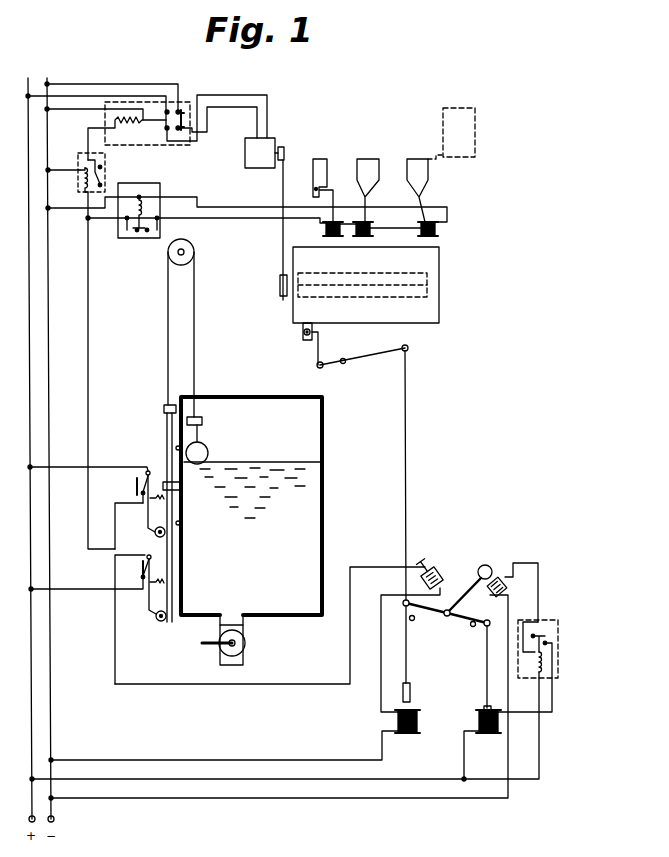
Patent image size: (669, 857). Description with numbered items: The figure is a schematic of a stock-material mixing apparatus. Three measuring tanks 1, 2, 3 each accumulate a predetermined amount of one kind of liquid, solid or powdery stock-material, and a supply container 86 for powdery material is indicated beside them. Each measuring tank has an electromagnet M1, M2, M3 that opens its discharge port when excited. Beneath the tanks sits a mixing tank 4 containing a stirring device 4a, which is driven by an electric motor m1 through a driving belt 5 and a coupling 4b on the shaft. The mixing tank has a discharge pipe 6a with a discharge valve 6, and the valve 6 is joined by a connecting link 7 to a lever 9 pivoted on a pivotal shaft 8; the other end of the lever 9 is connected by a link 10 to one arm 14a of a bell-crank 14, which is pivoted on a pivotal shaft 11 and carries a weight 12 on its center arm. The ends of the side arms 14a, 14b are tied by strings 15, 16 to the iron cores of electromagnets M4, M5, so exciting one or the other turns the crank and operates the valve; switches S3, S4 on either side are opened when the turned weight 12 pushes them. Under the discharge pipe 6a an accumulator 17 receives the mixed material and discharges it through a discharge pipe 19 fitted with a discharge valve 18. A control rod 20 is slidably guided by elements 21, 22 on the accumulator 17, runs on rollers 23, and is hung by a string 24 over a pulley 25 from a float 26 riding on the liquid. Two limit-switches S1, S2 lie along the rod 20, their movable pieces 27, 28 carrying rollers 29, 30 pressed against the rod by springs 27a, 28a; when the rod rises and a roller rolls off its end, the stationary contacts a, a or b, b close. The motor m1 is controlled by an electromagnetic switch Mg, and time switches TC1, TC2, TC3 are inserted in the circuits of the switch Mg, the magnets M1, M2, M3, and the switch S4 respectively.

The stock-material measuring tank 1 is at (322, 165).
The stock-material measuring tank 2 is at (367, 165).
The stock-material measuring tank 3 is at (416, 165).
The stock-material supply container 86 is at (462, 118).
The electromagnetic switch Mg is at (177, 116).
The electric motor m1 is at (278, 146).
The time switch TC1 is at (103, 172).
The time switch TC2 is at (158, 185).
The time switch TC3 is at (545, 618).
The electromagnet M1 is at (339, 237).
The electromagnet M2 is at (387, 237).
The electromagnet M3 is at (436, 237).
The electromagnet M4 is at (408, 733).
The electromagnet M5 is at (488, 733).
The mixing tank 4 is at (439, 312).
The stirring device 4a is at (348, 273).
The coupling 4b is at (280, 296).
The driving belt 5 is at (283, 245).
The discharge valve 6 is at (302, 332).
The discharge pipe 6a is at (312, 340).
The connecting link 7 is at (319, 350).
The pivotal shaft 8 is at (343, 364).
The lever 9 is at (368, 357).
The link 10 is at (406, 411).
The pivotal shaft 11 is at (450, 620).
The weight 12 is at (489, 566).
The bell-crank 14 is at (465, 597).
The arm of bell-crank 14a is at (413, 621).
The arm of bell-crank 14b is at (473, 620).
The string 15 is at (406, 660).
The string 16 is at (487, 672).
The accumulator 17 is at (322, 437).
The discharge valve 18 is at (245, 643).
The discharge pipe 19 is at (236, 620).
The control rod 20 is at (167, 422).
The guide element 21 is at (164, 409).
The guide element 22 is at (182, 486).
The rollers 23 is at (176, 448).
The string 24 is at (168, 292).
The pulley 25 is at (194, 252).
The float 26 is at (206, 446).
The movable piece 27 is at (147, 610).
The spring 27a is at (152, 588).
The movable piece 28 is at (147, 519).
The spring 28a is at (152, 502).
The roller 29 is at (157, 620).
The roller 30 is at (155, 536).
The limit-switch S1 is at (137, 584).
The limit-switch S2 is at (133, 501).
The switch S3 is at (432, 568).
The switch S4 is at (505, 583).
The stationary contacts a is at (141, 560).
The stationary contacts b is at (146, 467).